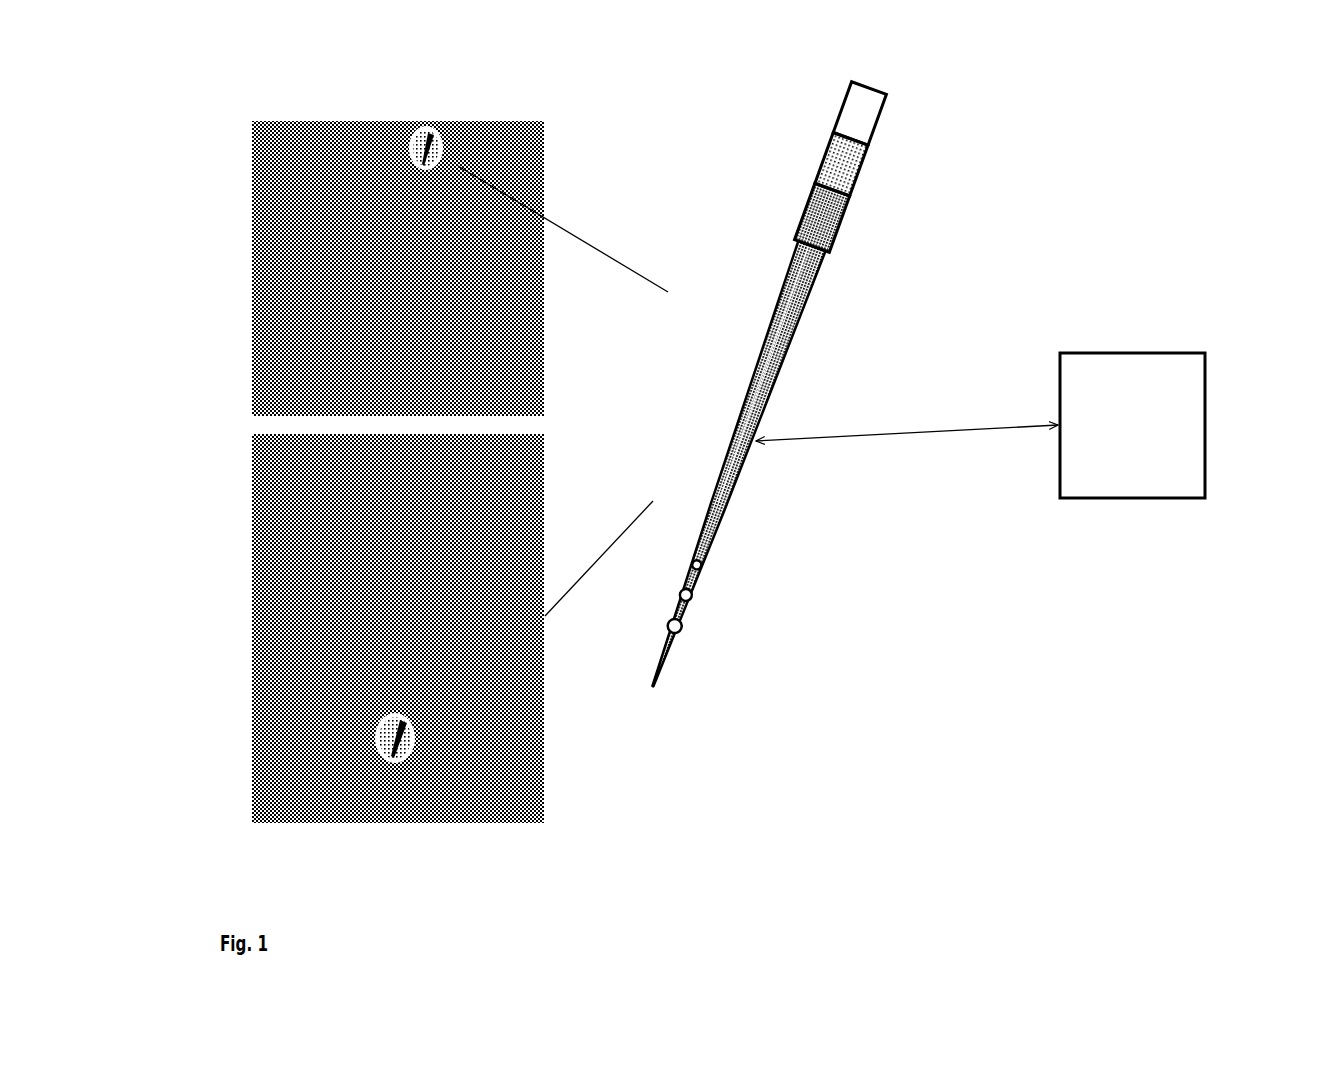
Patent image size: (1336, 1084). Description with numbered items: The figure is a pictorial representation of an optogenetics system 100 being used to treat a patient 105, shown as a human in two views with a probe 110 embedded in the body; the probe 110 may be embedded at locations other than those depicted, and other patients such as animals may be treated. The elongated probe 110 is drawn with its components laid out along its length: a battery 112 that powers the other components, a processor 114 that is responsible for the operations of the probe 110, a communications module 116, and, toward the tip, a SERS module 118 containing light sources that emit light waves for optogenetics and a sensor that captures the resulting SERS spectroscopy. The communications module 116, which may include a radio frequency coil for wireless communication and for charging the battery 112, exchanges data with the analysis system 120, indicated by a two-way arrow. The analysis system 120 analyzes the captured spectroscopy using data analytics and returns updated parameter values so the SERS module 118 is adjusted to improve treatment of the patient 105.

The system 100 is at (1298, 91).
The patient 105 is at (528, 102).
The probe 110 is at (867, 82).
The battery 112 is at (878, 92).
The processor 114 is at (858, 150).
The communications module 116 is at (835, 222).
The SERS module 118 is at (723, 532).
The analysis system 120 is at (1195, 305).